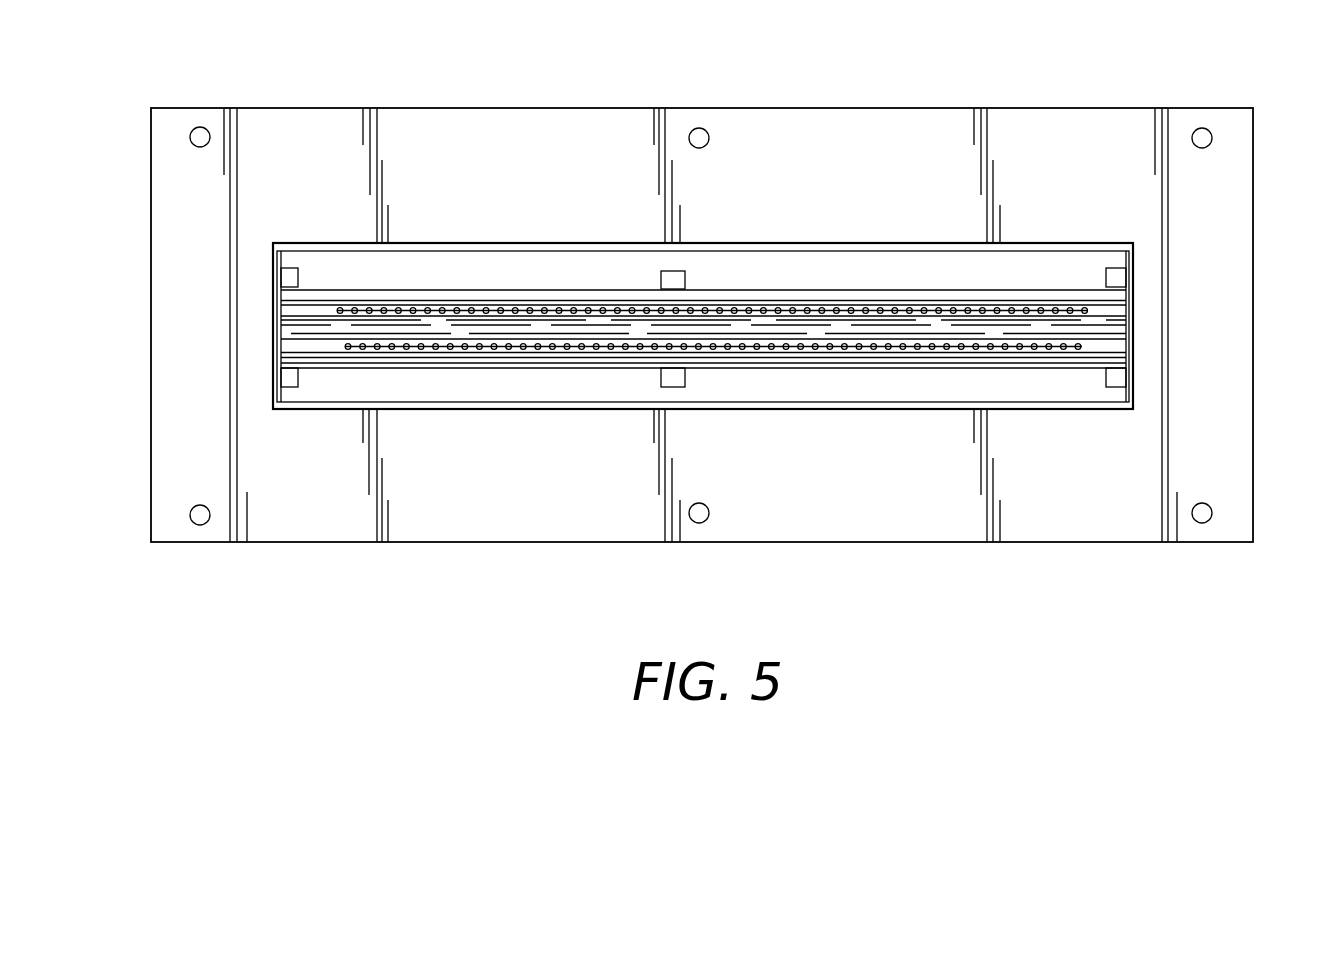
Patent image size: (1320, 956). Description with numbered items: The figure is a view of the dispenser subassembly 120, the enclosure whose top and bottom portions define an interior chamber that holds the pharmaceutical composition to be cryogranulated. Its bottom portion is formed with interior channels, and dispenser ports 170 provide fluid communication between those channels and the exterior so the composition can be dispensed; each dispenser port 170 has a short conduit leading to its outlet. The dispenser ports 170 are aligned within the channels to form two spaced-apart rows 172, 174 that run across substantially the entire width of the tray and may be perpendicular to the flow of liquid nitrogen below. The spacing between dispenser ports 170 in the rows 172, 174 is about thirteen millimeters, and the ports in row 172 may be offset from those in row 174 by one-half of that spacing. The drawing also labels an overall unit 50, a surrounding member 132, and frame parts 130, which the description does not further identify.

The light fixture assembly 50 is at (757, 98).
The mounting plate 132 is at (470, 108).
The housing 130 is at (537, 243).
The dispenser subassembly 120 is at (627, 288).
The row of dispenser ports 172 is at (865, 298).
The row of dispenser ports 174 is at (870, 357).
The dispenser port 170 is at (957, 308).